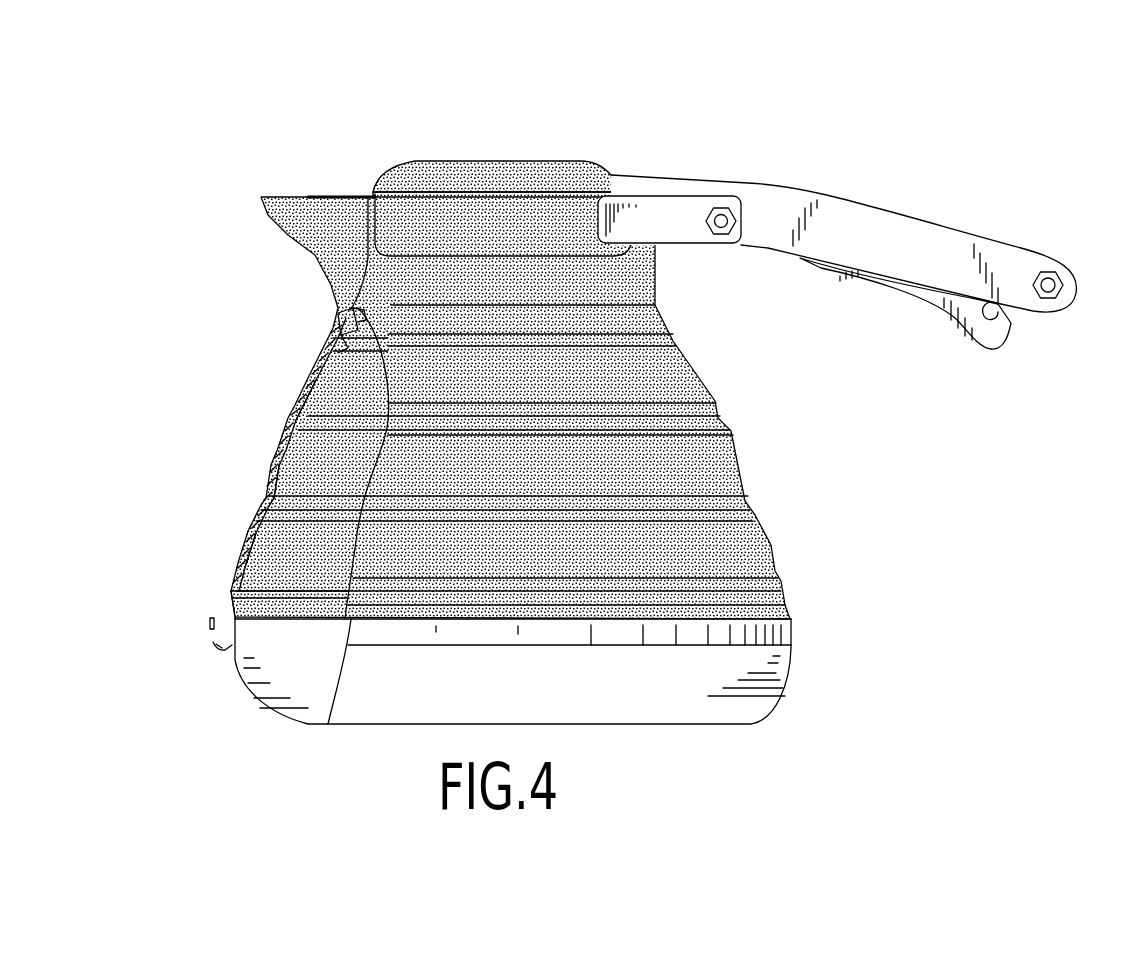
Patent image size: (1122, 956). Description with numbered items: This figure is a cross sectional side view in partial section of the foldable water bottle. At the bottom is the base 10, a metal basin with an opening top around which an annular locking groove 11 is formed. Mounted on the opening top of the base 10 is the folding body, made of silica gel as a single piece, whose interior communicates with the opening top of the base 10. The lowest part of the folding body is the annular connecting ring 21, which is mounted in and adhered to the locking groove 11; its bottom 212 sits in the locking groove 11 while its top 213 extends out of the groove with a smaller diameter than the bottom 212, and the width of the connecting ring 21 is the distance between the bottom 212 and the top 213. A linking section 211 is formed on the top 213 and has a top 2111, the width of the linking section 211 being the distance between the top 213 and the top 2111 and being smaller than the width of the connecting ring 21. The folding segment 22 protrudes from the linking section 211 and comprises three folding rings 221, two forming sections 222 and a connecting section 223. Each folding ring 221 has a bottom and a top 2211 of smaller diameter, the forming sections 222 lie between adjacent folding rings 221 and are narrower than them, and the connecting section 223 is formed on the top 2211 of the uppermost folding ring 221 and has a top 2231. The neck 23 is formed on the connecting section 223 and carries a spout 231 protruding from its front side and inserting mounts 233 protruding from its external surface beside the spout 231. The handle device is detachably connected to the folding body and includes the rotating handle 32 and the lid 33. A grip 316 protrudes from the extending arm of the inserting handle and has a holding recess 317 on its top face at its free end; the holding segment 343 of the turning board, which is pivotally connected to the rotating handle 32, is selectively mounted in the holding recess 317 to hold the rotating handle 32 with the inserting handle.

The base 10 is at (264, 716).
The locking groove 11 is at (220, 640).
The connecting ring 21 is at (196, 620).
The linking section 211 is at (223, 583).
The top of the linking section 2111 is at (223, 583).
The bottom of the connecting ring 212 is at (220, 643).
The top of the connecting ring 213 is at (223, 587).
The folding segment 22 is at (200, 391).
The folding rings 221 is at (240, 543).
The forming sections 222 is at (283, 410).
The connecting section 223 is at (328, 330).
The top of the folding ring 2211 is at (327, 330).
The top of the connecting section 2231 is at (337, 317).
The neck 23 is at (633, 270).
The spout 231 is at (263, 215).
The inserting mounts 233 is at (406, 205).
The rotating handle 32 is at (833, 178).
The grip 316 is at (893, 282).
The holding recess 317 is at (985, 310).
The lid 33 is at (492, 166).
The holding segment 343 is at (1010, 305).